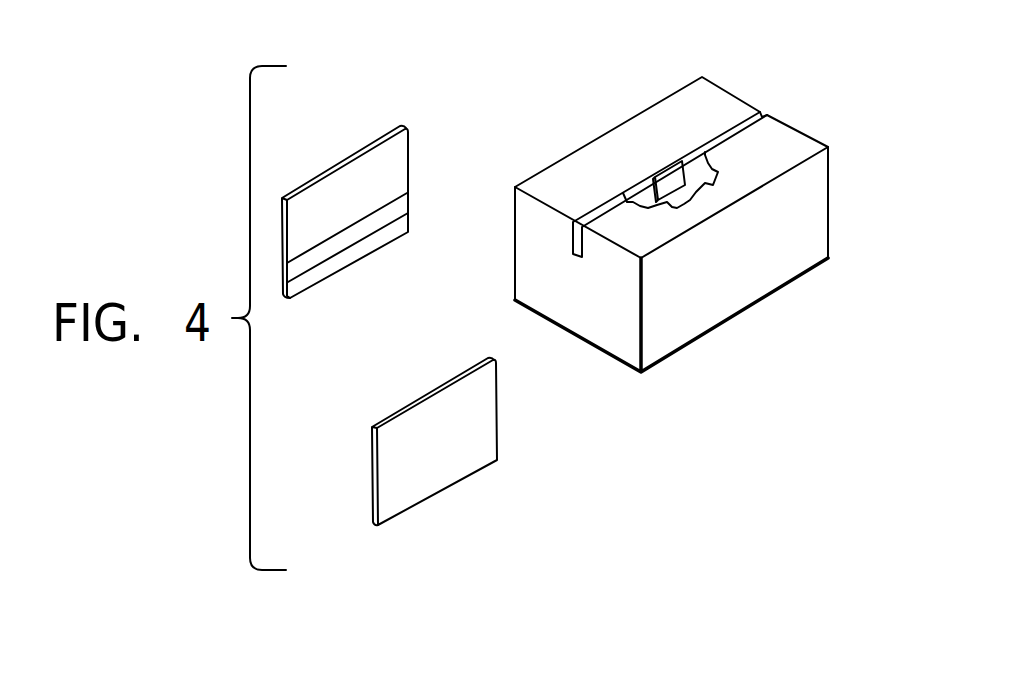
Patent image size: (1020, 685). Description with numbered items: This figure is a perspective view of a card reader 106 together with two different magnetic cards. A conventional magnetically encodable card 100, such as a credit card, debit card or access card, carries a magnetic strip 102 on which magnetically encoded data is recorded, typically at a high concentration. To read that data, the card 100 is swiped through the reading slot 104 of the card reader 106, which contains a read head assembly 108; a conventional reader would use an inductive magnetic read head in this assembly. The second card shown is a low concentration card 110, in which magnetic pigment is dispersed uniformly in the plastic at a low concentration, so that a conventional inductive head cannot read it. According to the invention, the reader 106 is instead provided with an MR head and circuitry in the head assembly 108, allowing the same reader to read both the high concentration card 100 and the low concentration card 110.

The magnetically encodable card 100 is at (377, 186).
The magnetic strip 102 is at (388, 217).
The reading slot 104 is at (687, 194).
The card reader 106 is at (702, 77).
The read head assembly 108 is at (672, 180).
The low concentration card 110 is at (497, 460).